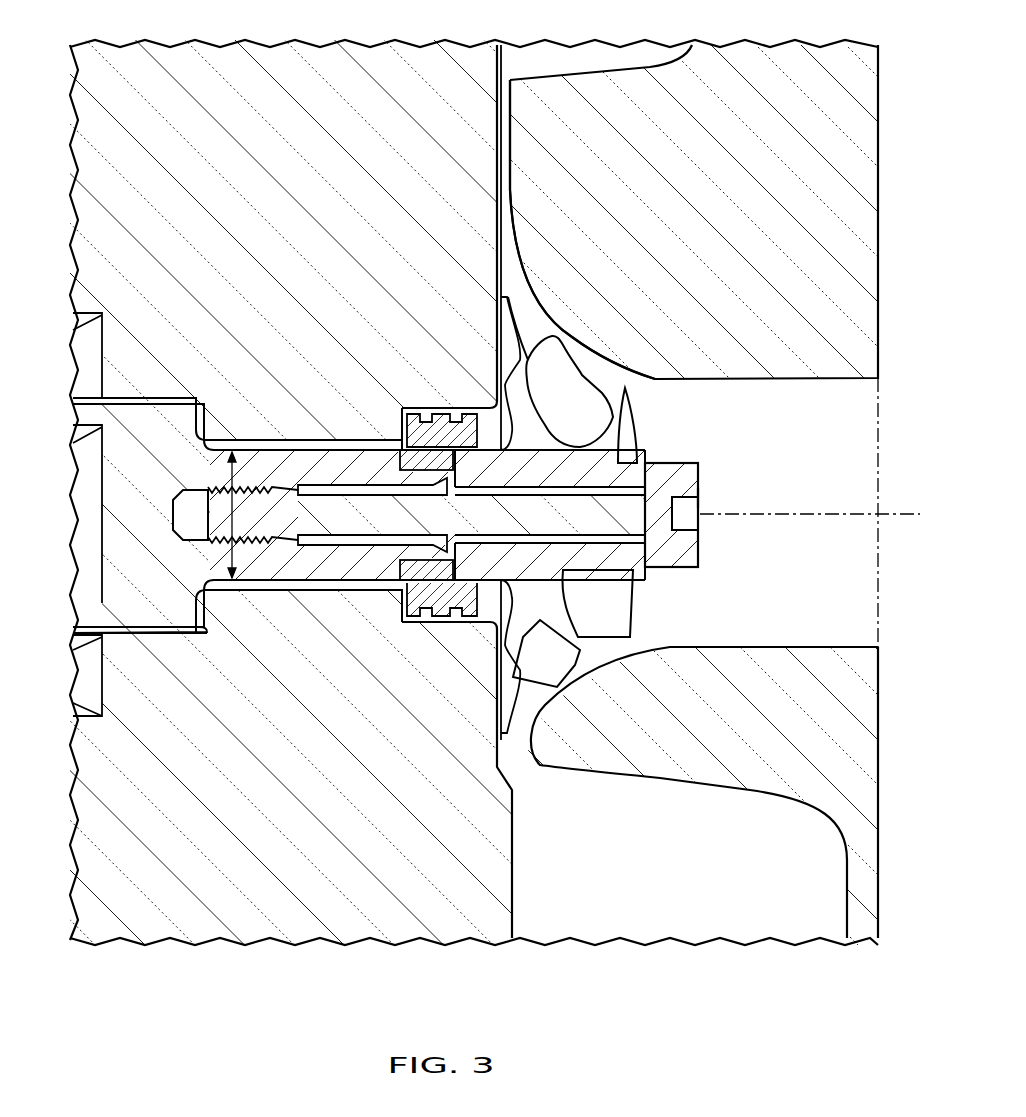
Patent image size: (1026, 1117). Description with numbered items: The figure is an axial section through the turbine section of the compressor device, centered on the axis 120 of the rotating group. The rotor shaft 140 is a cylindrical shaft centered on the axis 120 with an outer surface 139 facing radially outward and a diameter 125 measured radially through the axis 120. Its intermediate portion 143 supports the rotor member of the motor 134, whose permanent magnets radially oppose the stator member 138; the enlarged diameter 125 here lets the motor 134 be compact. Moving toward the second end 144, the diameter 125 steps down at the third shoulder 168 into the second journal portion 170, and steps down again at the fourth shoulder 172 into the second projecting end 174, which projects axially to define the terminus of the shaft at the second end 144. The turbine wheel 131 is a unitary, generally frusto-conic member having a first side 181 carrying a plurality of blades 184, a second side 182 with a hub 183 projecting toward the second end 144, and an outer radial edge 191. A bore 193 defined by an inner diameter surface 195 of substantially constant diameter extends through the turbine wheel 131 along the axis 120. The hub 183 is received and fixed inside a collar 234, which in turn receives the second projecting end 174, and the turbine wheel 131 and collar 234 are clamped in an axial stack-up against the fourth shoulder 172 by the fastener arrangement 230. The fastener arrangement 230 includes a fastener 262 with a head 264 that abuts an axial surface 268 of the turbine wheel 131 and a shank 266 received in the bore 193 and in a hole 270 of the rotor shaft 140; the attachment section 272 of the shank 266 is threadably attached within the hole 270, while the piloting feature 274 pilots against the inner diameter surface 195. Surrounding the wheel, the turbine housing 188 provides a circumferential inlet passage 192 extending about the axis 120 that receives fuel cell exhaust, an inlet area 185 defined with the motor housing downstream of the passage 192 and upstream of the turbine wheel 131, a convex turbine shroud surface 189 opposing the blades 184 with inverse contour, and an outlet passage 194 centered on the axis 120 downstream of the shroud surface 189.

The axis 120 is at (890, 513).
The diameter 125 is at (235, 456).
The turbine wheel 131 is at (582, 573).
The motor 134 is at (108, 323).
The stator member 138 is at (76, 364).
The outer surface 139 is at (150, 632).
The rotor shaft 140 is at (178, 433).
The intermediate portion 143 is at (140, 405).
The second end 144 is at (372, 450).
The third shoulder 168 is at (207, 630).
The second journal portion 170 is at (310, 580).
The fourth shoulder 172 is at (405, 606).
The second projecting end 174 is at (440, 608).
The first side 181 is at (570, 687).
The second side 182 is at (500, 340).
The hub 183 is at (468, 452).
The blades 184 is at (620, 393).
The inlet area 185 is at (490, 180).
The turbine housing 188 is at (775, 95).
The turbine shroud surface 189 is at (573, 345).
The outer radial edge 191 is at (496, 745).
The circumferential inlet passage 192 is at (578, 58).
The bore 193 is at (560, 510).
The outlet passage 194 is at (879, 372).
The inner diameter surface 195 is at (690, 512).
The fastener arrangement 230 is at (708, 497).
The collar 234 is at (486, 578).
The fastener 262 is at (313, 503).
The head 264 is at (693, 466).
The shank 266 is at (285, 528).
The axial surface 268 is at (650, 473).
The hole 270 is at (383, 545).
The attachment section 272 is at (208, 488).
The piloting feature 274 is at (680, 567).